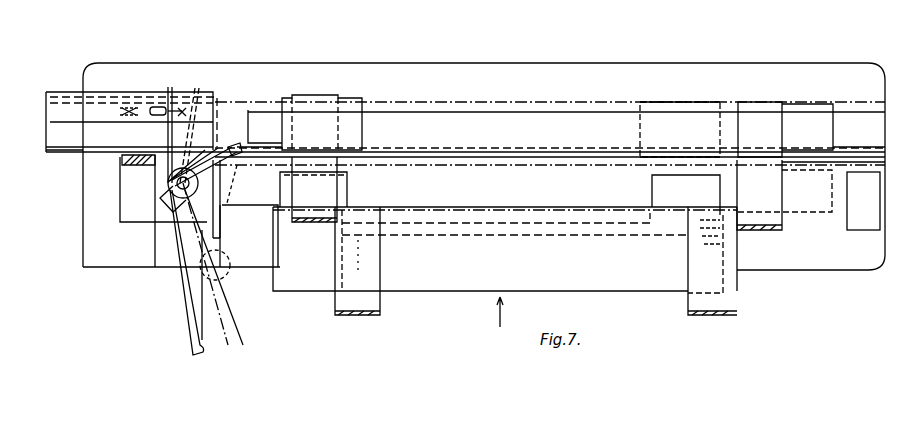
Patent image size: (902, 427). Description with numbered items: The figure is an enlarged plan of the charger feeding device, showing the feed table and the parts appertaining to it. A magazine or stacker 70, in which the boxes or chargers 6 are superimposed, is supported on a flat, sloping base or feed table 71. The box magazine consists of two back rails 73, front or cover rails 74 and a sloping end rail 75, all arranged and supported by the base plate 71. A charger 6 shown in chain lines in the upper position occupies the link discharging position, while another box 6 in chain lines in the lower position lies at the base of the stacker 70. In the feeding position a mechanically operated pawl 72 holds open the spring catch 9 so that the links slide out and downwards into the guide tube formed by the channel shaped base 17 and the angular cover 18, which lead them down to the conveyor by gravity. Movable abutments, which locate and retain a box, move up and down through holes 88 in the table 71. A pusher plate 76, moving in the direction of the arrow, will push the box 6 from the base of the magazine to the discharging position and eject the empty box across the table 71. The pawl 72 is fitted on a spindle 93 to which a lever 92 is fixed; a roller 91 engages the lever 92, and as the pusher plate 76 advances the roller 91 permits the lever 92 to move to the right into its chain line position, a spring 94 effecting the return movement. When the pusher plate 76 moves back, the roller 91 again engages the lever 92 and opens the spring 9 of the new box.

The charger 6 is at (556, 103).
The spring catch 9 is at (249, 216).
The channel shaped base 17 is at (65, 150).
The angular cover 18 is at (110, 98).
The magazine or stacker 70 is at (438, 188).
The feed table 71 is at (757, 80).
The pawl 72 is at (222, 145).
The back rails 73 is at (375, 305).
The front or cover rails 74 is at (315, 215).
The sloping end rail 75 is at (220, 222).
The pusher plate 76 is at (465, 283).
The holes 88 is at (352, 98).
The roller 91 is at (230, 257).
The lever 92 is at (230, 328).
The spindle 93 is at (168, 183).
The spring 94 is at (135, 113).